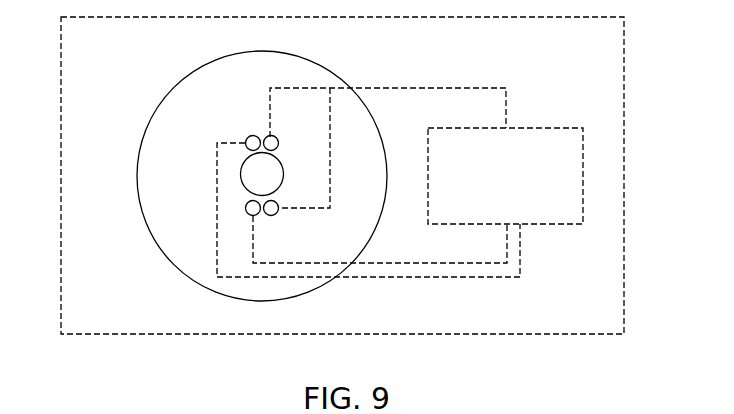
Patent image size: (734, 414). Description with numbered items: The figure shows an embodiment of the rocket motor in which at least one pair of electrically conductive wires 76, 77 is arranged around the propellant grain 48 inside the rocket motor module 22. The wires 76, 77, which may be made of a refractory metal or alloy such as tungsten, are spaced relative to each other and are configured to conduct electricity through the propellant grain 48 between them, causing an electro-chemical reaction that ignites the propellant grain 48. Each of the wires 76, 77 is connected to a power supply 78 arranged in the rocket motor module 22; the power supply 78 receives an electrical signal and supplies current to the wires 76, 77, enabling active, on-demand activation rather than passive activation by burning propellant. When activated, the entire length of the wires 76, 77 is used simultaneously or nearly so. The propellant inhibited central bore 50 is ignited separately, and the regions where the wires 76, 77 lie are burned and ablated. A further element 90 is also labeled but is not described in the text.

The rocket motor module 22 is at (60, 137).
The propellant grain 48 is at (182, 208).
The propellant inhibited central bore 50 is at (240, 173).
The electrically conductive wire 76 is at (245, 143).
The electrically conductive wire 77 is at (271, 135).
The power supply 78 is at (583, 176).
The component 90 is at (121, 413).